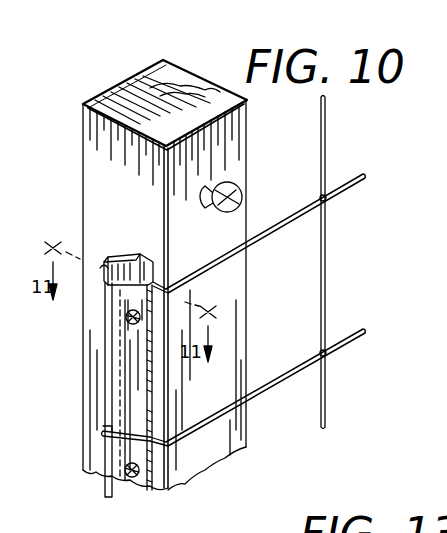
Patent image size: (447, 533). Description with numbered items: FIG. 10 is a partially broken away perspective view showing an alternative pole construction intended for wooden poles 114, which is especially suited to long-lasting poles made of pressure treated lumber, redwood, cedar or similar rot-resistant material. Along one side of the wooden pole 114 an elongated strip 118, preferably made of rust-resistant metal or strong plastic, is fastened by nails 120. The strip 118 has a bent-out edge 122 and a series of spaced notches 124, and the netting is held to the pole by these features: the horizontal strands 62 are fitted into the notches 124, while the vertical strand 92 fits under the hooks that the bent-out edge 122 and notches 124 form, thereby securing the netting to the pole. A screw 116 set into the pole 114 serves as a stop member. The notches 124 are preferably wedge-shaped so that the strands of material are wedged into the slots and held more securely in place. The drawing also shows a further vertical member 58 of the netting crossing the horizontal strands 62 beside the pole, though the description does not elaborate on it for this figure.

The wooden pole 114 is at (205, 83).
The screw 116 is at (240, 190).
The vertical wire 58 is at (328, 148).
The horizontal strand 62 is at (292, 220).
The vertical strand 92 is at (112, 373).
The elongated strip 118 is at (178, 382).
The nail 120 is at (141, 312).
The bent-out edge 122 is at (118, 255).
The notch 124 is at (100, 268).